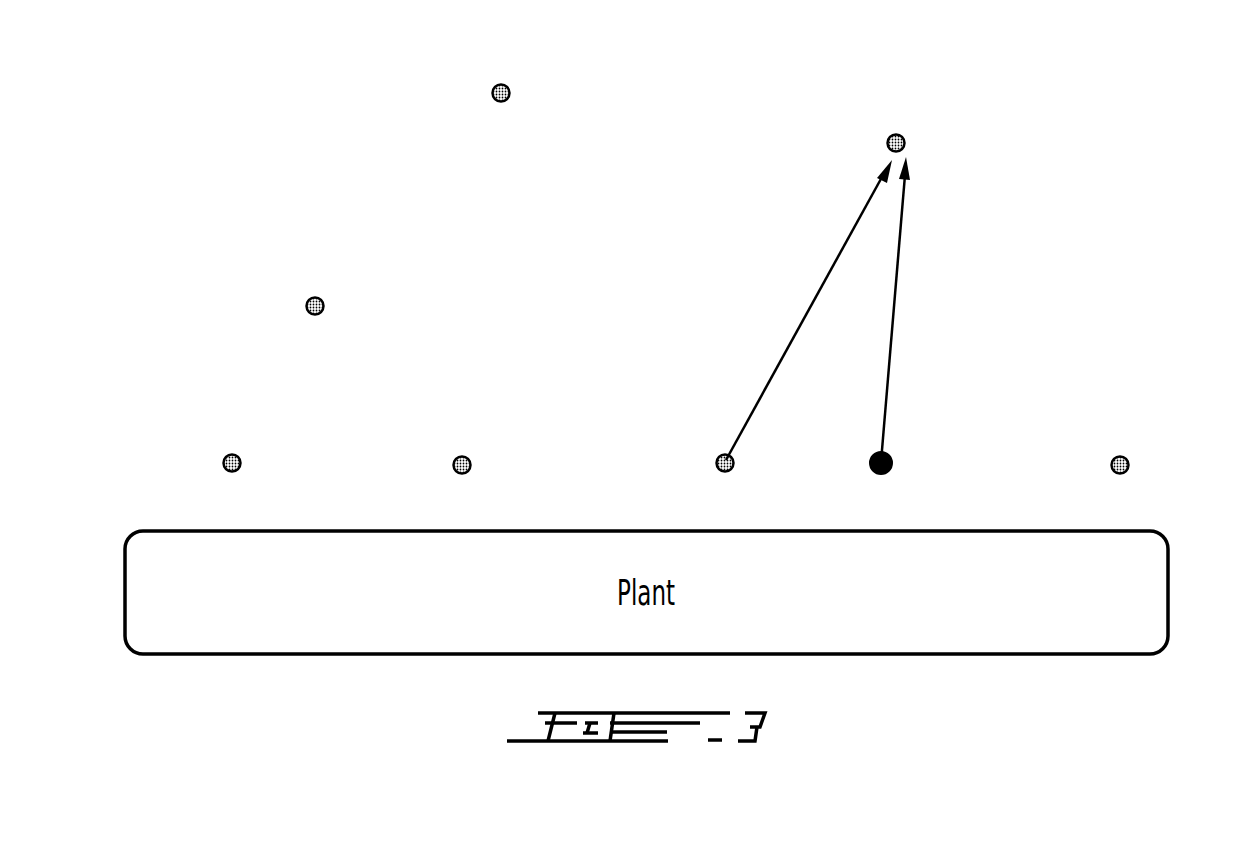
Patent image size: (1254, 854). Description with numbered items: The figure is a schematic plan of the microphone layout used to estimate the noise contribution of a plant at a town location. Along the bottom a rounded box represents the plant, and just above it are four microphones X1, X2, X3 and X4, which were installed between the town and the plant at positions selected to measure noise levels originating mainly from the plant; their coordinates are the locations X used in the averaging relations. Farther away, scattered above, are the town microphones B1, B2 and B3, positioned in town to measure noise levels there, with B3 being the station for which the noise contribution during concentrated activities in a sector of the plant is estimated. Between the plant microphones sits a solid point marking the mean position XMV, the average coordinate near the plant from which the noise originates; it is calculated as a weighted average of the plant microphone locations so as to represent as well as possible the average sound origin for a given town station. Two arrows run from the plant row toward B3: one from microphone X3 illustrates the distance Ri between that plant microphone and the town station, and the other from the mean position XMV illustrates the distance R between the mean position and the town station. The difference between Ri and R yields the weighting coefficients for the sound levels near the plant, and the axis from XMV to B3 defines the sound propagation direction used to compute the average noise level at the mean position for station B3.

The microphone in town B1 is at (501, 76).
The microphone in town B2 is at (315, 289).
The microphone in town B3 is at (919, 146).
The microphone near the plant X1 is at (196, 465).
The microphone near the plant X2 is at (424, 450).
The microphone near the plant X3 is at (688, 450).
The microphone near the plant X4 is at (1084, 465).
The average point of the microphones near the plant XMV is at (942, 433).
The distance between microphone i near the plant and the station in town Ri is at (809, 310).
The distance between the mean position and the station in town R is at (955, 270).
The location of microphones near the plant X is at (1212, 476).